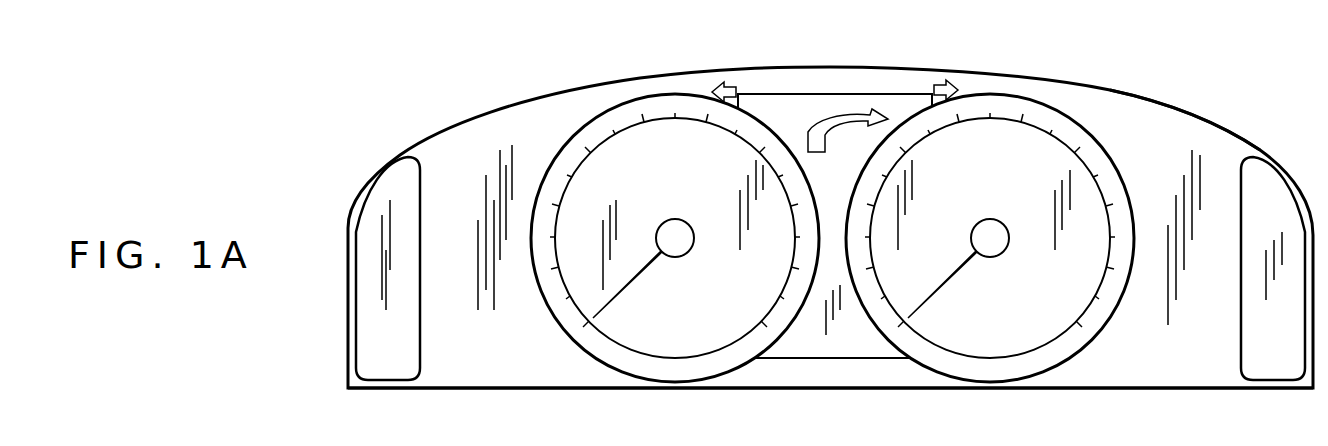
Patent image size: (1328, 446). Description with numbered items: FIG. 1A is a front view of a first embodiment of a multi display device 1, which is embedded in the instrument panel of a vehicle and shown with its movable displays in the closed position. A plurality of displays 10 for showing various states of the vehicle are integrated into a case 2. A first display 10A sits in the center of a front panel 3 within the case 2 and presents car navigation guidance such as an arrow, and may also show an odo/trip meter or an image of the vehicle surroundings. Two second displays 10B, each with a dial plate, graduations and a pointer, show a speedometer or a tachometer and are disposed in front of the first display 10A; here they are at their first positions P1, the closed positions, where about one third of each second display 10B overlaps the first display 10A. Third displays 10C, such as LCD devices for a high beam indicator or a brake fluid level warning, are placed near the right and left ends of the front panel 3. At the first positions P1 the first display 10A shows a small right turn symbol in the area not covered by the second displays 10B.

The multi display device 1 is at (1248, 141).
The case 2 is at (757, 390).
The front panel 3 is at (1167, 130).
The displays 10 is at (868, 180).
The first display 10A is at (816, 93).
The second displays 10B is at (1063, 40).
The third displays 10C is at (380, 365).
The first positions P1 is at (559, 337).